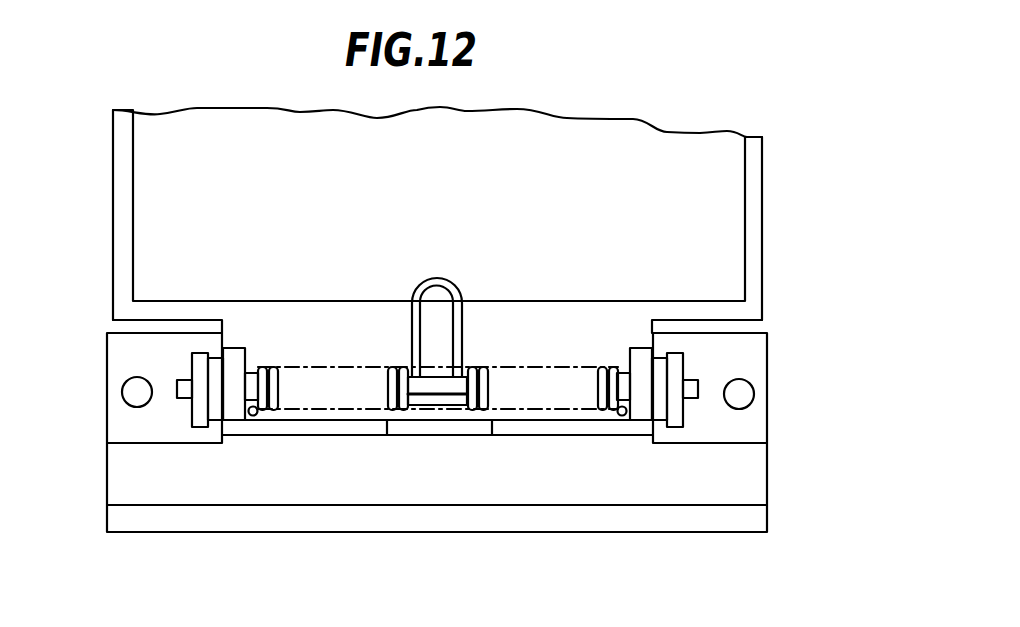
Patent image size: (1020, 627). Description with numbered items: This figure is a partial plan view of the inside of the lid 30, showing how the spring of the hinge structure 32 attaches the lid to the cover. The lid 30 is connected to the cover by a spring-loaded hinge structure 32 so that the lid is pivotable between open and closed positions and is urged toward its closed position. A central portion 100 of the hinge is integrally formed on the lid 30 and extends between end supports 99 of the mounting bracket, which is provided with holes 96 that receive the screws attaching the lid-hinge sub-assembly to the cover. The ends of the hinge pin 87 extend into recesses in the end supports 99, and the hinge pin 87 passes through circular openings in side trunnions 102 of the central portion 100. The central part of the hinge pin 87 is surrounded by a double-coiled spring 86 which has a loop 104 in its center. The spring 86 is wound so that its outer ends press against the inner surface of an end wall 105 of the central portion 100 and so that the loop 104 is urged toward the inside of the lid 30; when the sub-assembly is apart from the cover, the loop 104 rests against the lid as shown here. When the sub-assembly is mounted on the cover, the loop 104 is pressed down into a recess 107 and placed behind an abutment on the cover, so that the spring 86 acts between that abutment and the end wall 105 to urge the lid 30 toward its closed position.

The lid 30 is at (762, 153).
The end supports 99 is at (187, 335).
The hinge structure 32 is at (172, 455).
The holes 96 is at (128, 383).
The hinge pin 87 is at (195, 400).
The side trunnions 102 is at (243, 362).
The end wall 105 is at (358, 437).
The recess 107 is at (490, 422).
The central portion 100 is at (581, 446).
The double-coiled spring 86 is at (480, 365).
The loop 104 is at (462, 318).